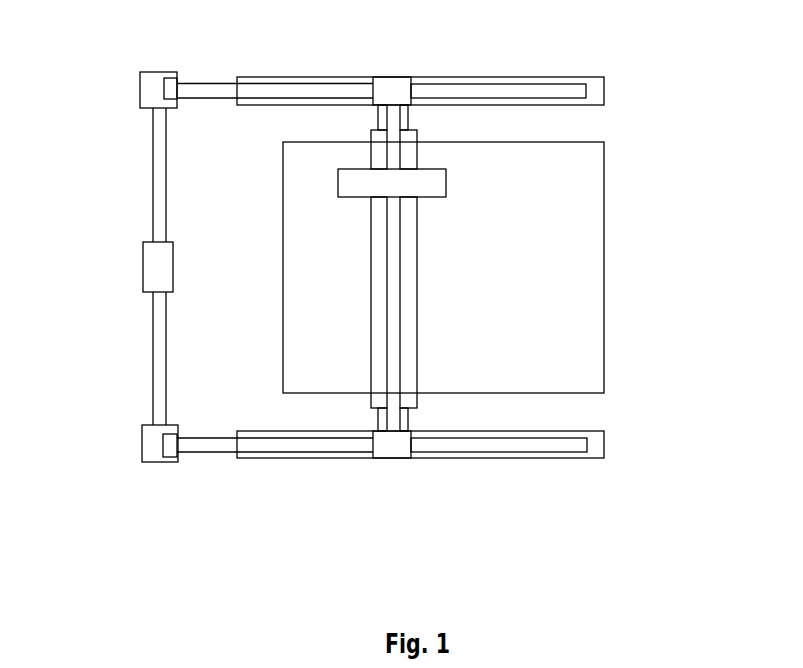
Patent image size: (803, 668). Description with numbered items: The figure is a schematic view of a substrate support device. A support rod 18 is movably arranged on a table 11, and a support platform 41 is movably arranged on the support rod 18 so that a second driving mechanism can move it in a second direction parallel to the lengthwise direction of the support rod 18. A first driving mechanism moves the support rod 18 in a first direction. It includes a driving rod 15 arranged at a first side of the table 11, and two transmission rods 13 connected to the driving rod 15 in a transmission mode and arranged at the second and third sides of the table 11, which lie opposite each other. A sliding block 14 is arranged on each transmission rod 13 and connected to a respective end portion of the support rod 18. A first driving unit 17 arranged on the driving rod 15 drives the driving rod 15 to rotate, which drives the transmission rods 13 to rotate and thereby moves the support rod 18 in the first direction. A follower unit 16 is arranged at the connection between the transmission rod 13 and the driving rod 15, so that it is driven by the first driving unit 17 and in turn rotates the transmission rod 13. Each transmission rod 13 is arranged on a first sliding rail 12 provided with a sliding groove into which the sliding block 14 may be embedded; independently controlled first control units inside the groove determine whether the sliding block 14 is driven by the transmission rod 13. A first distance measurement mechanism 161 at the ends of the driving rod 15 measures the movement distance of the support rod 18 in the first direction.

The table 11 is at (570, 208).
The first sliding rail 12 is at (596, 88).
The transmission rod 13 is at (200, 82).
The sliding block 14 is at (405, 460).
The driving rod 15 is at (150, 170).
The follower unit 16 is at (135, 448).
The first distance measurement mechanism 161 is at (168, 445).
The first driving unit 17 is at (138, 263).
The support rod 18 is at (405, 363).
The support platform 41 is at (425, 176).